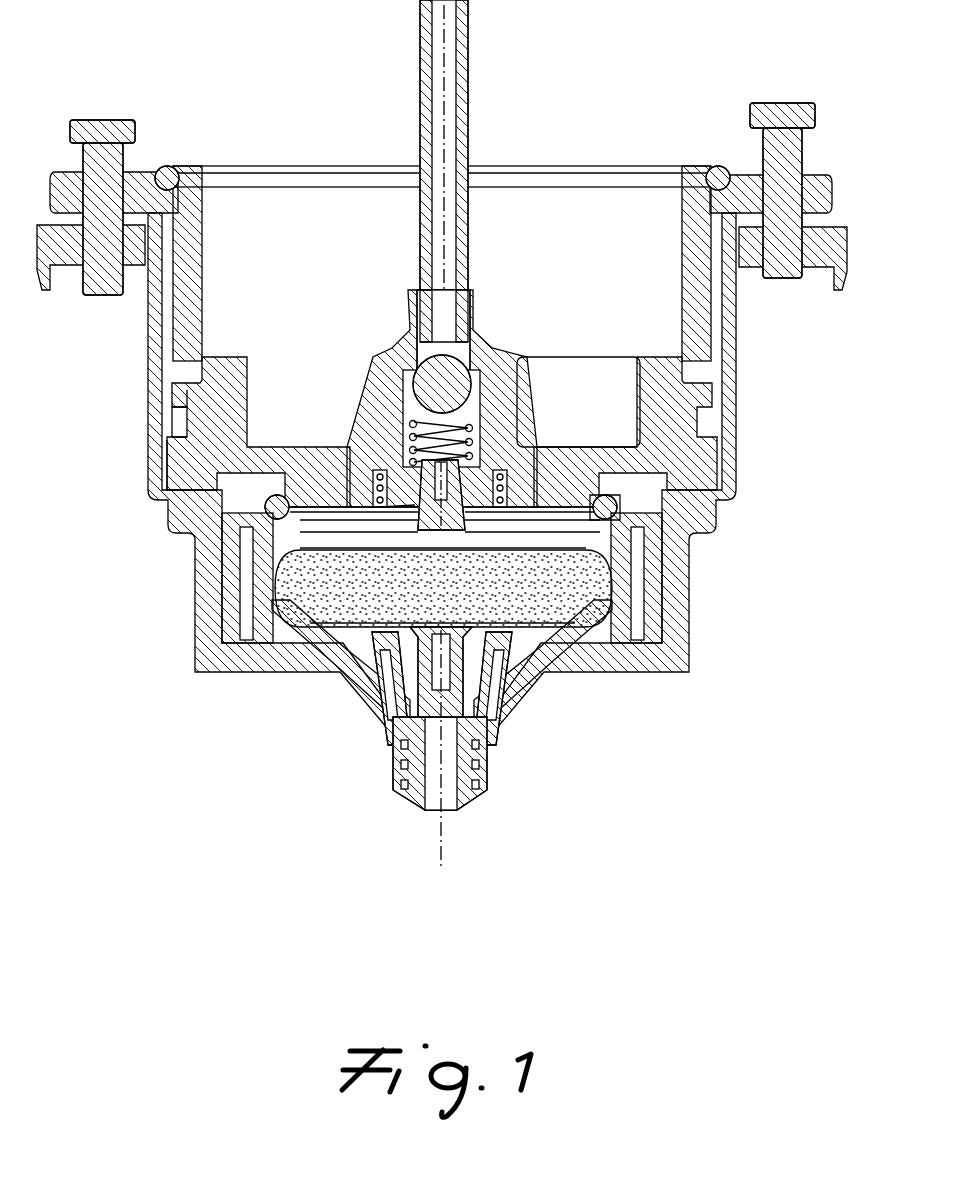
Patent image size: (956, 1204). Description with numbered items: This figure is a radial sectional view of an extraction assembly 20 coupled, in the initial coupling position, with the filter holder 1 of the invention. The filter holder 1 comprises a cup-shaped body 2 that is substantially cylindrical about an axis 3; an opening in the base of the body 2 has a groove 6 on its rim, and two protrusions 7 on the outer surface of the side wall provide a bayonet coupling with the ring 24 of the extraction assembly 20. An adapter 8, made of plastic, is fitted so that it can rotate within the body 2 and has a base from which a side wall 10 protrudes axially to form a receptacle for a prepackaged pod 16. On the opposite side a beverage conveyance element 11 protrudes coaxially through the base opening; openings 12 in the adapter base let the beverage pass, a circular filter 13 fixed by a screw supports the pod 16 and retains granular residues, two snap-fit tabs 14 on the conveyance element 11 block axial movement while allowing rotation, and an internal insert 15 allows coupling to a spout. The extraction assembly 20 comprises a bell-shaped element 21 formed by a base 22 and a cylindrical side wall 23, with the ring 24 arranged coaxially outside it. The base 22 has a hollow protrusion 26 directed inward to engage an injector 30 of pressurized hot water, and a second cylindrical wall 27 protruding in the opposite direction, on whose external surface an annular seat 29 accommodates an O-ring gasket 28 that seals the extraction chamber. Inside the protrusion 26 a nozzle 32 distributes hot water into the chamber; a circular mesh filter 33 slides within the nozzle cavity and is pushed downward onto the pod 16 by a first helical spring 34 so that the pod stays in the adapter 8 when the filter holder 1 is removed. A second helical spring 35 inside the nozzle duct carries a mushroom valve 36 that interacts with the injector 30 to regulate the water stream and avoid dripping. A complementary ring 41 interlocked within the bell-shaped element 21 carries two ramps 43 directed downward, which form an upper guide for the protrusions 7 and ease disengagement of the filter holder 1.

The filter holder 1 is at (200, 680).
The body 2 is at (670, 640).
The axis 3 is at (440, 845).
The groove 6 is at (328, 672).
The protrusions 7 is at (690, 515).
The adapter 8 is at (600, 650).
The side wall 10 is at (265, 560).
The beverage conveyance element 11 is at (473, 667).
The openings 12 is at (478, 700).
The circular filter 13 is at (550, 636).
The tabs 14 is at (375, 722).
The internal insert 15 is at (415, 790).
The pod 16 is at (287, 612).
The extraction assembly 20 is at (130, 318).
The bell-shaped element 21 is at (655, 365).
The base 22 is at (577, 485).
The side wall 23 is at (690, 270).
The ring 24 is at (737, 322).
The hollow protrusion 26 is at (457, 355).
The second cylindrical wall 27 is at (627, 540).
The O-ring gasket 28 is at (618, 502).
The annular seat 29 is at (607, 495).
The injector 30 is at (463, 67).
The nozzle 32 is at (370, 505).
The mesh filter 33 is at (327, 512).
The first helical spring 34 is at (380, 505).
The second helical spring 35 is at (487, 382).
The mushroom valve 36 is at (415, 372).
The complementary ring 41 is at (190, 430).
The ramps 43 is at (175, 475).